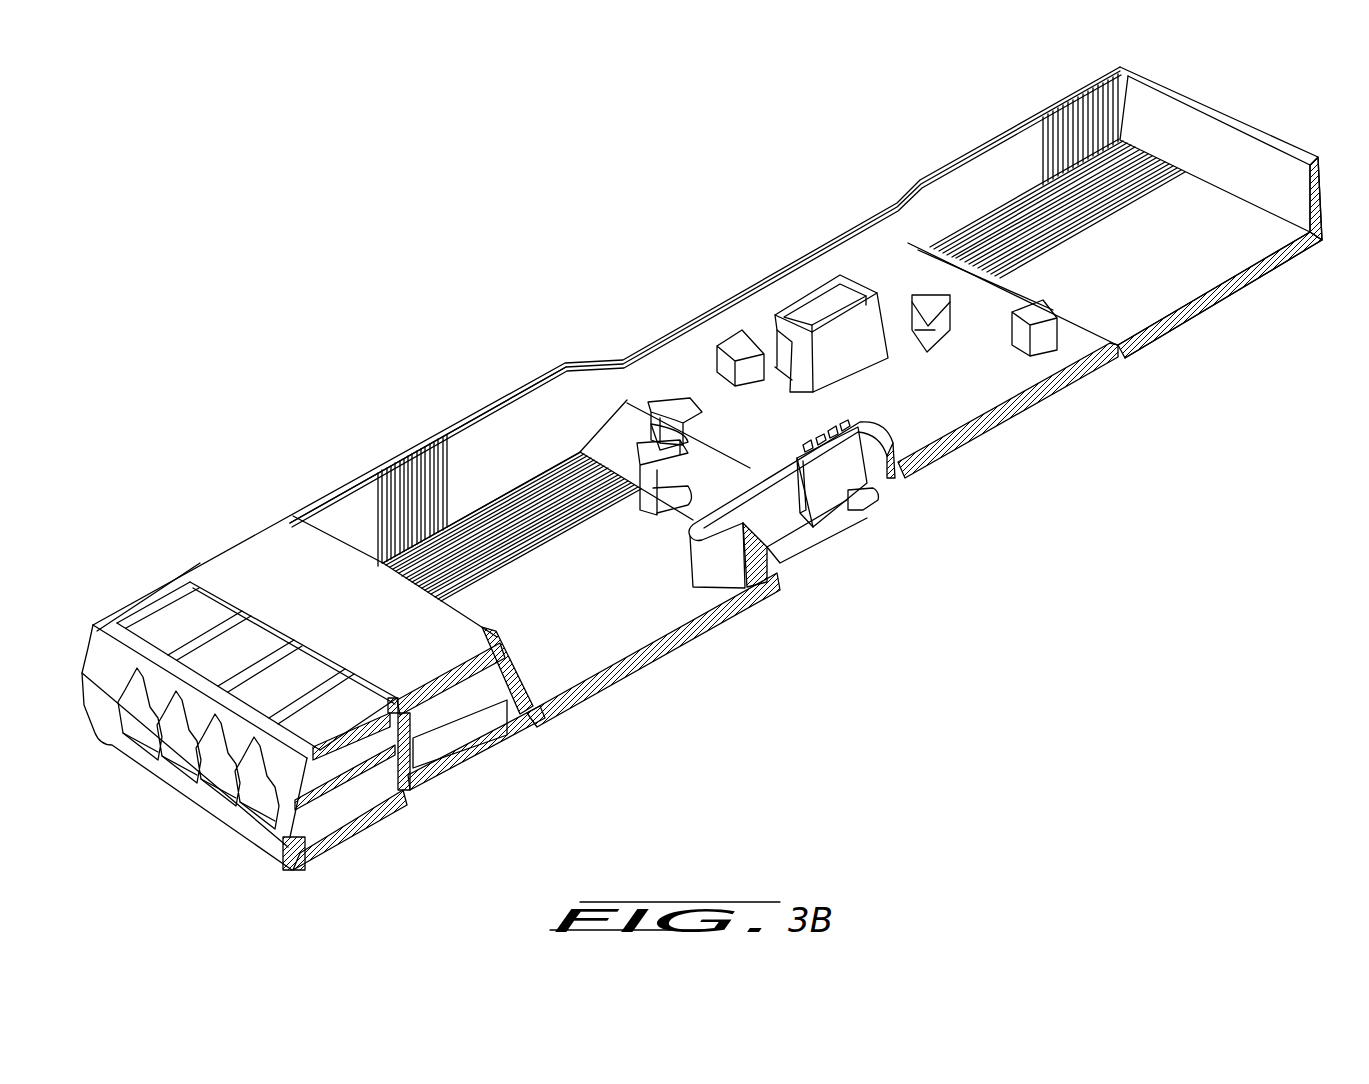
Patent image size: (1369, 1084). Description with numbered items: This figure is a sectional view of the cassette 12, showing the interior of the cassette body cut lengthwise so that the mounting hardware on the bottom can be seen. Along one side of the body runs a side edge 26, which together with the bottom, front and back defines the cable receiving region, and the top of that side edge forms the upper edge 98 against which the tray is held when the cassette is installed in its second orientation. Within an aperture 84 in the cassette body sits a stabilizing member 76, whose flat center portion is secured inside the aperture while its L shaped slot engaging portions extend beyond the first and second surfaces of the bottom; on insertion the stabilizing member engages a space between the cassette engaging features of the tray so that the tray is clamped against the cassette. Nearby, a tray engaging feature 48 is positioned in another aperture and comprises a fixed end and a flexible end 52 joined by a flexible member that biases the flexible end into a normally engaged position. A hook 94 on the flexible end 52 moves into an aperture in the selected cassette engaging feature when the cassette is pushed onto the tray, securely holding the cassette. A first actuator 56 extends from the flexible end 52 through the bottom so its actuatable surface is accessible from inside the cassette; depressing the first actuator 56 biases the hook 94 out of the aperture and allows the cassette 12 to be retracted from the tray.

The cassette 12 is at (362, 362).
The side edge 26 is at (511, 433).
The upper edge 98 is at (690, 320).
The aperture 84 is at (830, 303).
The stabilizing member 76 is at (843, 345).
The flexible end 52 is at (877, 497).
The hook 94 is at (868, 503).
The first actuator 56 is at (830, 483).
The tray engaging feature 48 is at (828, 540).